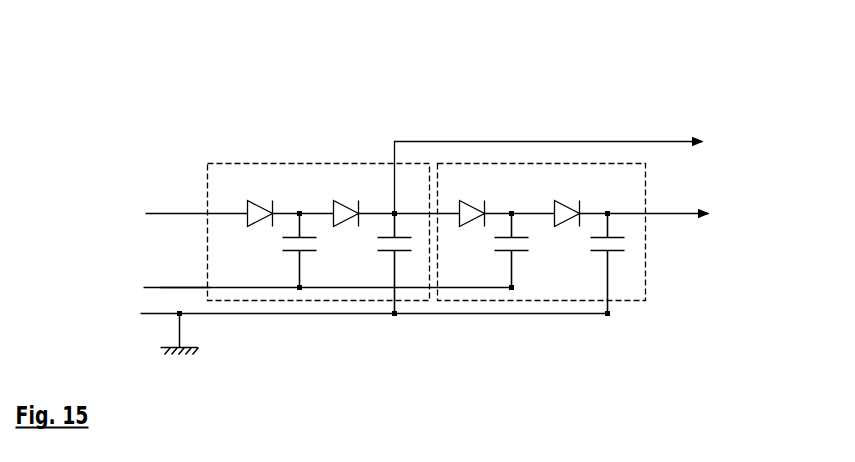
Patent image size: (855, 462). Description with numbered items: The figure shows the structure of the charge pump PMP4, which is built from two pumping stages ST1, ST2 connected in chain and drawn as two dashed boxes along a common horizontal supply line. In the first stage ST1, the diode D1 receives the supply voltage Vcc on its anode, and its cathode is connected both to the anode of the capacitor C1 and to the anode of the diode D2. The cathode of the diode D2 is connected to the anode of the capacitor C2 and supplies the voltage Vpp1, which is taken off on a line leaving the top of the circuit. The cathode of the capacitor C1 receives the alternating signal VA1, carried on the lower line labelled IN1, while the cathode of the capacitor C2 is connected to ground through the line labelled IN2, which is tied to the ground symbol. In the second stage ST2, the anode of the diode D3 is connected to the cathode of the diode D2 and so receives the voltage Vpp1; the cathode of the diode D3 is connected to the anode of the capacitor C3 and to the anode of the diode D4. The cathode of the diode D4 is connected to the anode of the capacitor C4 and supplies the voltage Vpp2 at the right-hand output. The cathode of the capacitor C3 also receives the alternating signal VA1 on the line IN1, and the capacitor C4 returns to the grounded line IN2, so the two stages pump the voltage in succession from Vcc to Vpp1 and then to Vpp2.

The charge pump PMP4 is at (100, 170).
The first pumping stage ST1 is at (252, 184).
The second pumping stage ST2 is at (478, 184).
The diode D1 is at (260, 228).
The diode D2 is at (347, 228).
The diode D3 is at (473, 228).
The diode D4 is at (566, 228).
The capacitor C1 is at (309, 251).
The capacitor C2 is at (402, 264).
The capacitor C3 is at (519, 251).
The capacitor C4 is at (616, 264).
The supply voltage Vcc is at (182, 214).
The alternating signal VA1 is at (186, 277).
The first clock input IN1 is at (314, 288).
The second clock input IN2 is at (360, 314).
The first pumped voltage Vpp1 is at (572, 173).
The second pumped voltage Vpp2 is at (667, 214).